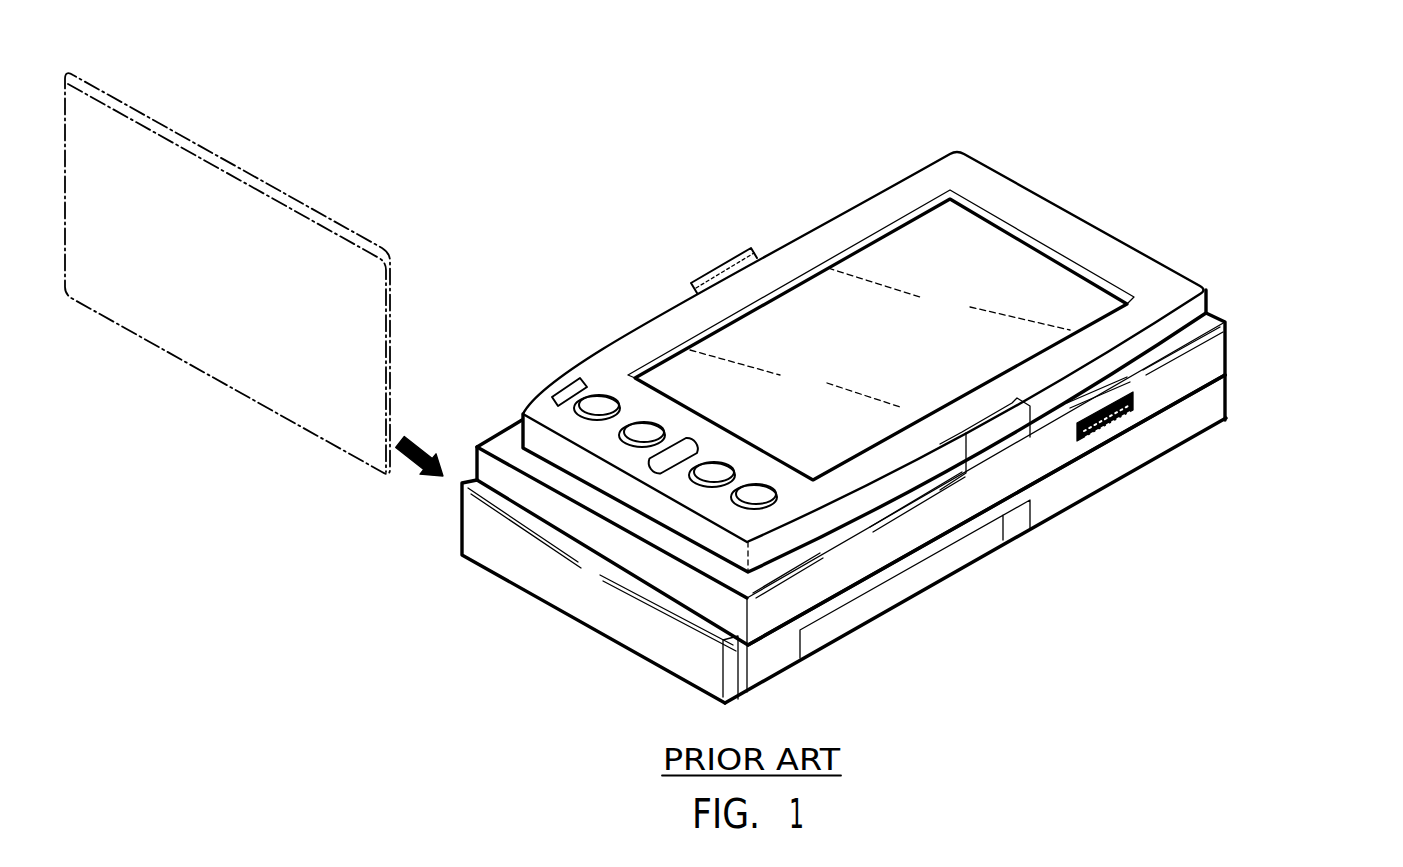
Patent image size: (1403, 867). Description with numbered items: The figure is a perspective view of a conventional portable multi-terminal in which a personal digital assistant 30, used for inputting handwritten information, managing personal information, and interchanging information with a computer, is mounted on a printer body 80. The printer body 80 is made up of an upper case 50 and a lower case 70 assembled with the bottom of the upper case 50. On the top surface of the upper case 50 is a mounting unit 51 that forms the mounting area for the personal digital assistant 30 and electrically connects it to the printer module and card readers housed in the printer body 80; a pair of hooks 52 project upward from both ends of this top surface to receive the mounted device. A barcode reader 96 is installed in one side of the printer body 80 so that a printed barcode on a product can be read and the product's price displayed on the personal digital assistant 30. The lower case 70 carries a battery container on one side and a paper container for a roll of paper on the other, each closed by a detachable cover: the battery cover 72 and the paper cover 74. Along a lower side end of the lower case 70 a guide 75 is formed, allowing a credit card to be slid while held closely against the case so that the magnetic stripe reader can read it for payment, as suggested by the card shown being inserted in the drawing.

The personal digital assistant 30 is at (890, 200).
The upper case 50 is at (900, 479).
The mounting unit 51 is at (500, 437).
The hooks 52 is at (995, 447).
The lower case 70 is at (844, 539).
The battery cover 72 is at (853, 622).
The paper cover 74 is at (1100, 480).
The guide 75 is at (468, 519).
The printer body 80 is at (870, 508).
The barcode reader 96 is at (1133, 405).